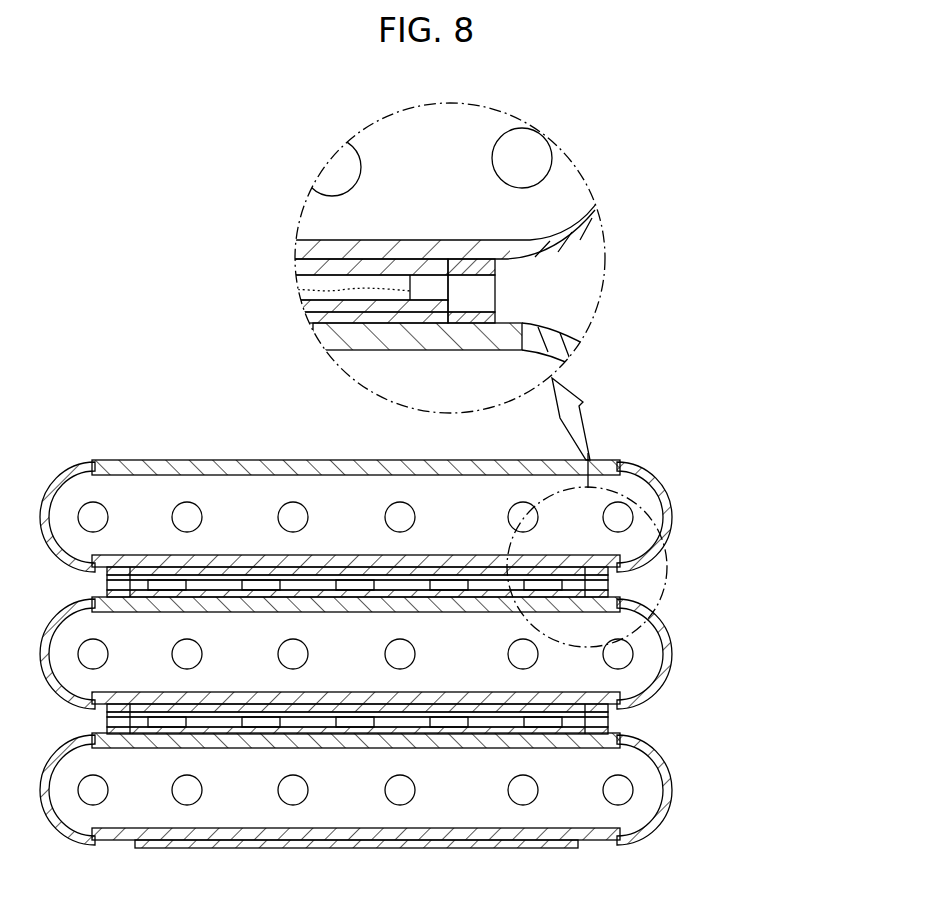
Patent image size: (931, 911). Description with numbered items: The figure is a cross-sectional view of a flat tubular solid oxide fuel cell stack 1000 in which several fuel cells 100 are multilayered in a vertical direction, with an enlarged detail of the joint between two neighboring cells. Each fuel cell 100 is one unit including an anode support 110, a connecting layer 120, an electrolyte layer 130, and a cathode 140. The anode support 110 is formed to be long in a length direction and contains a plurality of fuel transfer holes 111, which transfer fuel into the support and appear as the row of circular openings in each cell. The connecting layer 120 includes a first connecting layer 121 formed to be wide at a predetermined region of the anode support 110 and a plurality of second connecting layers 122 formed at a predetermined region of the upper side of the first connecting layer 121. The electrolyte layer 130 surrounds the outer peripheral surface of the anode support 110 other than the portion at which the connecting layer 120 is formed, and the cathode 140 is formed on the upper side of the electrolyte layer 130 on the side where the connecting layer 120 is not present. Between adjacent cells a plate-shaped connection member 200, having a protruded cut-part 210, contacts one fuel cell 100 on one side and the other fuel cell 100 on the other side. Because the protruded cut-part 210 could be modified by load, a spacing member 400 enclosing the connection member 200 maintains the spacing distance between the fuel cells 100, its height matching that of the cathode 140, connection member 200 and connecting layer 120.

The solid oxide fuel cell stack 1000 is at (712, 300).
The fuel cell 100 is at (684, 484).
The anode support 110 is at (652, 478).
The fuel transfer holes 111 is at (95, 510).
The connecting layer 120 is at (235, 408).
The first connecting layer 121 is at (340, 345).
The second connecting layers 122 is at (312, 324).
The electrolyte layer 130 is at (667, 525).
The cathode 140 is at (291, 248).
The connection member 200 is at (297, 308).
The cut-part 210 is at (292, 289).
The spacing member 400 is at (511, 268).